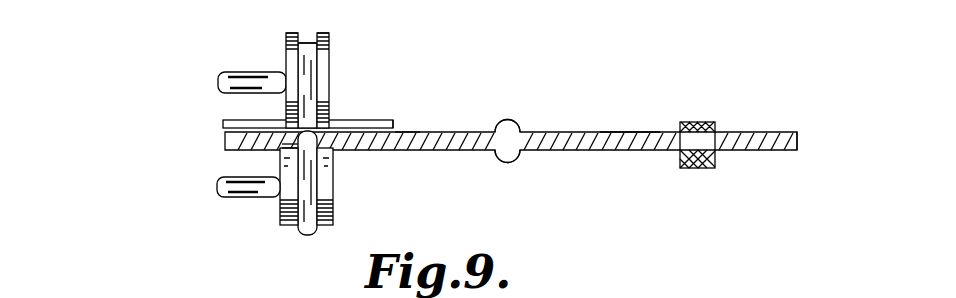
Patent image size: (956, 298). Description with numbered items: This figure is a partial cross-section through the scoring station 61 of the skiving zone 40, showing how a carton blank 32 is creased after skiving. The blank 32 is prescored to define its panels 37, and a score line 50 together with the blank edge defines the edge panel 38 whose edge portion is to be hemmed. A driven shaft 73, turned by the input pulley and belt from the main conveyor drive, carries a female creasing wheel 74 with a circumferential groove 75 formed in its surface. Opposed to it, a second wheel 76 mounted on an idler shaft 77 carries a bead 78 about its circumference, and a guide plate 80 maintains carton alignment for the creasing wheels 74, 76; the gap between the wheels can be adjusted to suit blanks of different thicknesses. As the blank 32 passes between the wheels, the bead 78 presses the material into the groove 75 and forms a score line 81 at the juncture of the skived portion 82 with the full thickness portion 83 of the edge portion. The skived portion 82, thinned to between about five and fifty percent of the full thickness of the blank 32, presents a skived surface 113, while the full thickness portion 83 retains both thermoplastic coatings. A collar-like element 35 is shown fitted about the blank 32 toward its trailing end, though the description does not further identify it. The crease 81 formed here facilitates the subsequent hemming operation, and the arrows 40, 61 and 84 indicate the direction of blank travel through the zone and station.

The blank 32 is at (793, 137).
The collar 35 is at (708, 122).
The panels 37 is at (623, 136).
The edge panel 38 is at (450, 131).
The skiving zone 40 is at (170, 92).
The score line 50 is at (506, 126).
The scoring station 61 is at (166, 150).
The shaft 73 is at (233, 72).
The female creasing wheel 74 is at (328, 73).
The circumferential groove 75 is at (312, 43).
The second wheel 76 is at (334, 207).
The idler shaft 77 is at (253, 198).
The bead 78 is at (304, 236).
The guide plate 80 is at (388, 122).
The score line 81 is at (283, 142).
The skived portion 82 is at (225, 134).
The full thickness portion 83 is at (403, 131).
The direction of movement 84 is at (756, 187).
The skived surface 113 is at (290, 143).